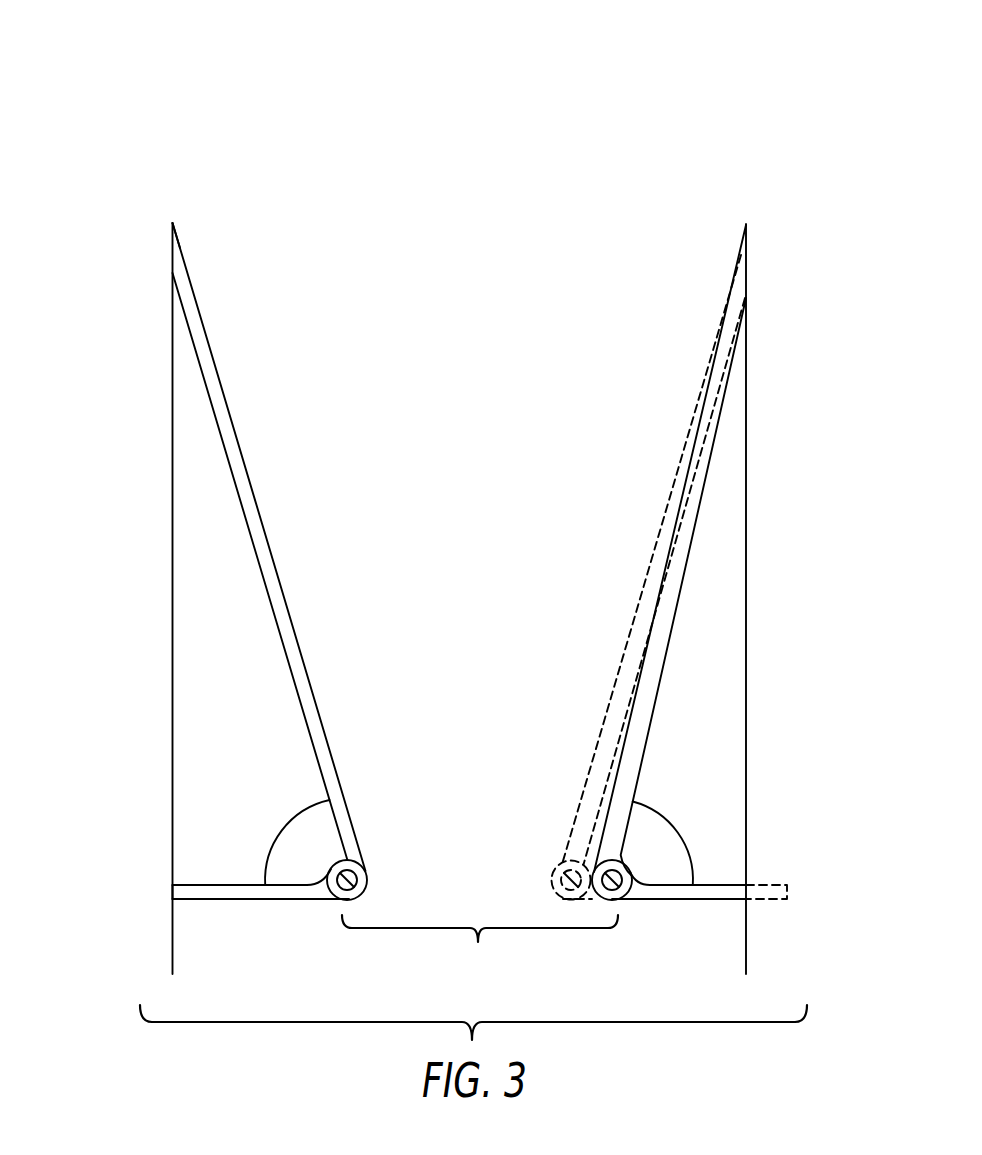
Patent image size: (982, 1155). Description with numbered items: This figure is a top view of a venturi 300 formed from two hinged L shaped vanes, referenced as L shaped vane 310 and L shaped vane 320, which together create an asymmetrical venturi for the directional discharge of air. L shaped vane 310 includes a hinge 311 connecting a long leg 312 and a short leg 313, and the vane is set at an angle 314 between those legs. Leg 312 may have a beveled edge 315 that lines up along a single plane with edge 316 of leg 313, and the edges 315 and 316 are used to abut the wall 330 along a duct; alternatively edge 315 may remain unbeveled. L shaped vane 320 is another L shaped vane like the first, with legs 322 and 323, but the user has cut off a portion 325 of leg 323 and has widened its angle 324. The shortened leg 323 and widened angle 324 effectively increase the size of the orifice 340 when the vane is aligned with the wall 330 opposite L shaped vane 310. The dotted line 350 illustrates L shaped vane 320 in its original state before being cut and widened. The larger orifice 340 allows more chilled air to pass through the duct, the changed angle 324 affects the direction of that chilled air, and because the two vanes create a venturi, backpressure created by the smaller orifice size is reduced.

The venturi 300 is at (336, 113).
The L shaped vane 310 is at (243, 570).
The L shaped vane 320 is at (684, 569).
The wall 330 is at (128, 616).
The beveled edge 315 is at (172, 247).
The leg 312 is at (292, 627).
The hinge 311 is at (367, 887).
The leg 313 is at (246, 928).
The angle 314 is at (282, 833).
The edge 316 is at (172, 891).
The leg 322 is at (668, 458).
The leg 323 is at (712, 928).
The angle 324 is at (682, 833).
The portion 325 is at (767, 900).
The orifice 340 is at (480, 943).
The dotted line 350 is at (610, 683).